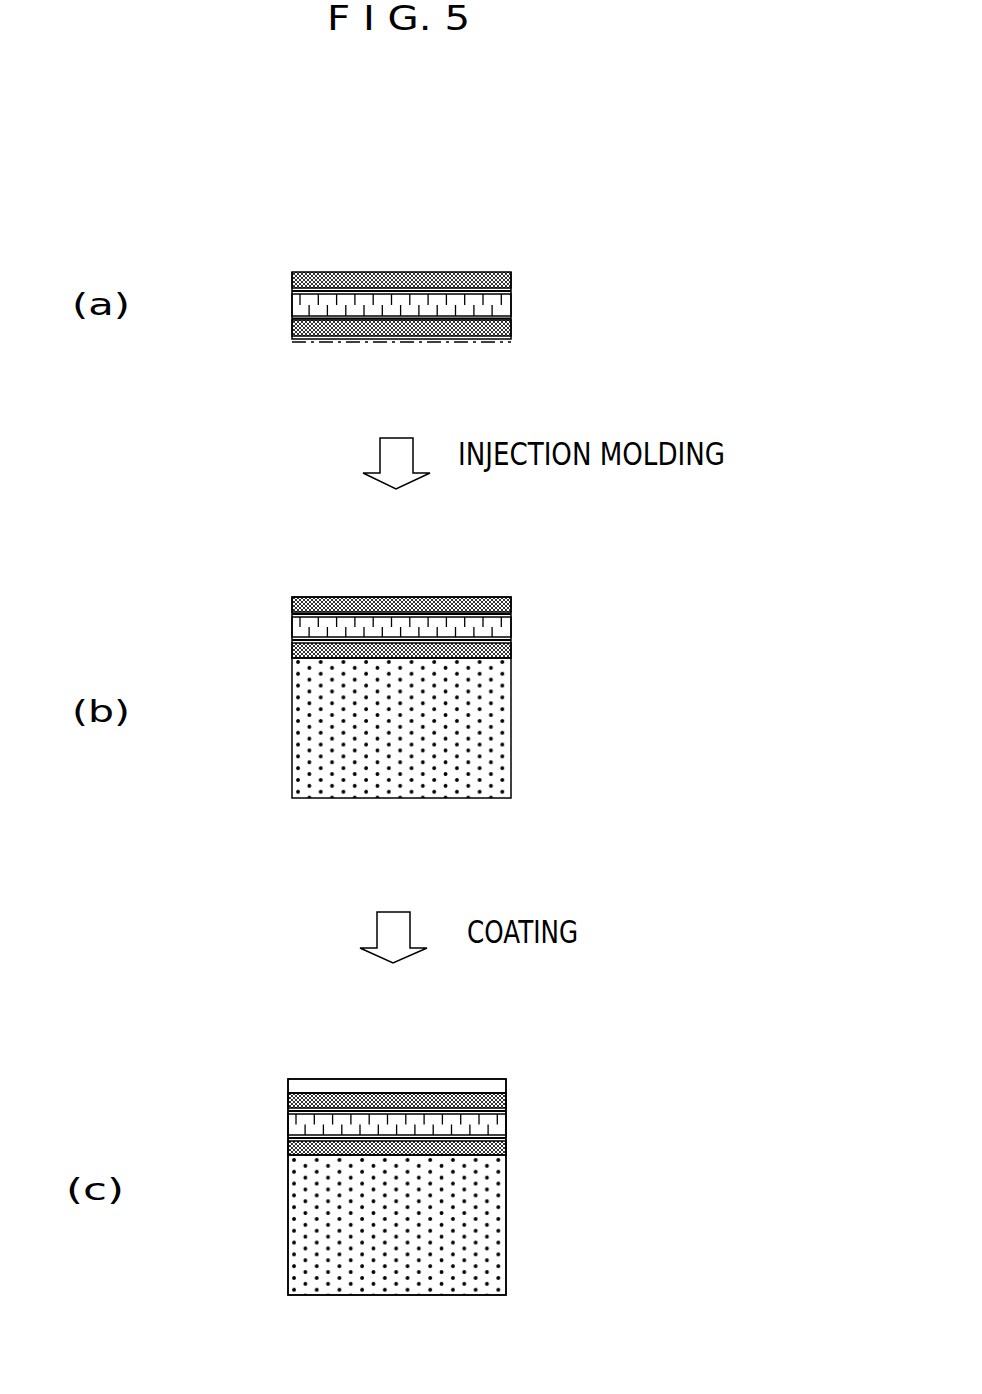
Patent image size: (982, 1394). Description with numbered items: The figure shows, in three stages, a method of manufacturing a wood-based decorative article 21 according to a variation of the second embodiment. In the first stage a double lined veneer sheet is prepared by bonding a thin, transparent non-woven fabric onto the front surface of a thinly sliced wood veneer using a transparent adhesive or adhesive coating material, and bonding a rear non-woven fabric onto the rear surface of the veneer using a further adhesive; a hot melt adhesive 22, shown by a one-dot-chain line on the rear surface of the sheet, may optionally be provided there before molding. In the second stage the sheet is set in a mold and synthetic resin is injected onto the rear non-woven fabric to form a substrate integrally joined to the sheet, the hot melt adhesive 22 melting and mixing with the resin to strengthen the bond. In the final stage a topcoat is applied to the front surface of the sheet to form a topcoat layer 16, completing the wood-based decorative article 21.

The topcoat layer 16 is at (297, 1090).
The wood-based decorative article 21 is at (457, 1060).
The hot melt adhesive 22 is at (353, 345).